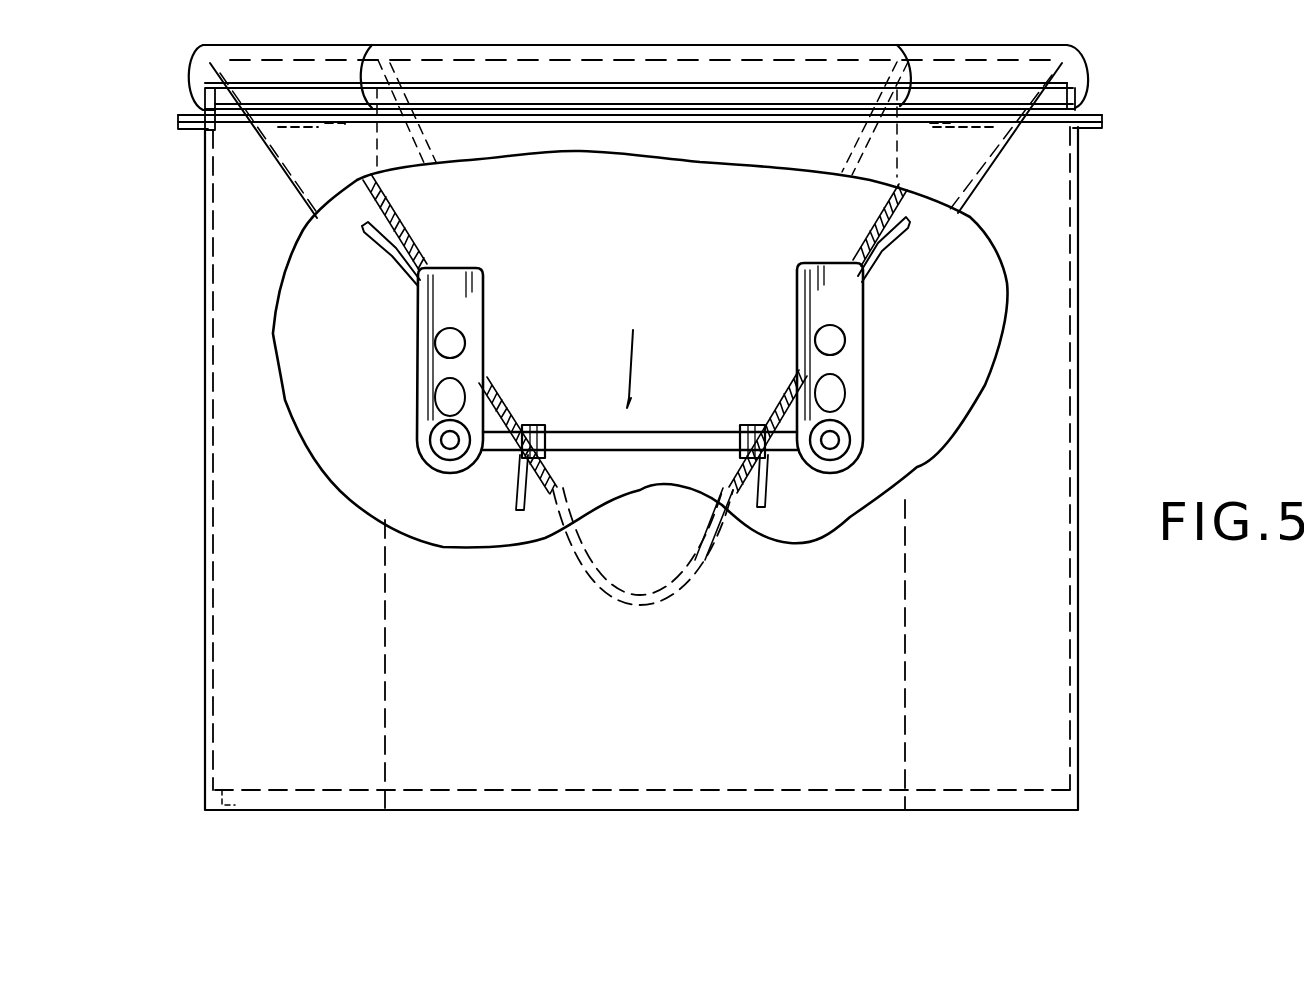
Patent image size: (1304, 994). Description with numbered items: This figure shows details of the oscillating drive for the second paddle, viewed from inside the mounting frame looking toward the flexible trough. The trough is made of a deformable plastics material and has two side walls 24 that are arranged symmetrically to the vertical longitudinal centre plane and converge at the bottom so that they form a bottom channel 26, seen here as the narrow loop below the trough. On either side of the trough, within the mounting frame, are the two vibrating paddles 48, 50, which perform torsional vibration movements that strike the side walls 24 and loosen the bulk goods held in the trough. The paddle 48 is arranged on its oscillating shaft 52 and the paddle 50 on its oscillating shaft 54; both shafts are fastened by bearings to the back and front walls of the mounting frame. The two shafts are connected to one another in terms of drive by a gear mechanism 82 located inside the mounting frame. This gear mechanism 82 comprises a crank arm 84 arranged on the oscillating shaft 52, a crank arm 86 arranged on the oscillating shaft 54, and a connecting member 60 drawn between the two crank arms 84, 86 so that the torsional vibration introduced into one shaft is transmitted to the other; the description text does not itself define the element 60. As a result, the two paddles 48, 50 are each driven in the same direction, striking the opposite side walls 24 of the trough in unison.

The side walls 24 is at (403, 260).
The bottom channel 26 is at (672, 572).
The vibrating paddle 48 is at (902, 232).
The vibrating paddle 50 is at (365, 240).
The oscillating shaft 52 is at (835, 342).
The oscillating shaft 54 is at (455, 340).
The rod 60 is at (703, 440).
The gear mechanism 82 is at (636, 348).
The crank arm 84 is at (862, 372).
The crank arm 86 is at (425, 378).